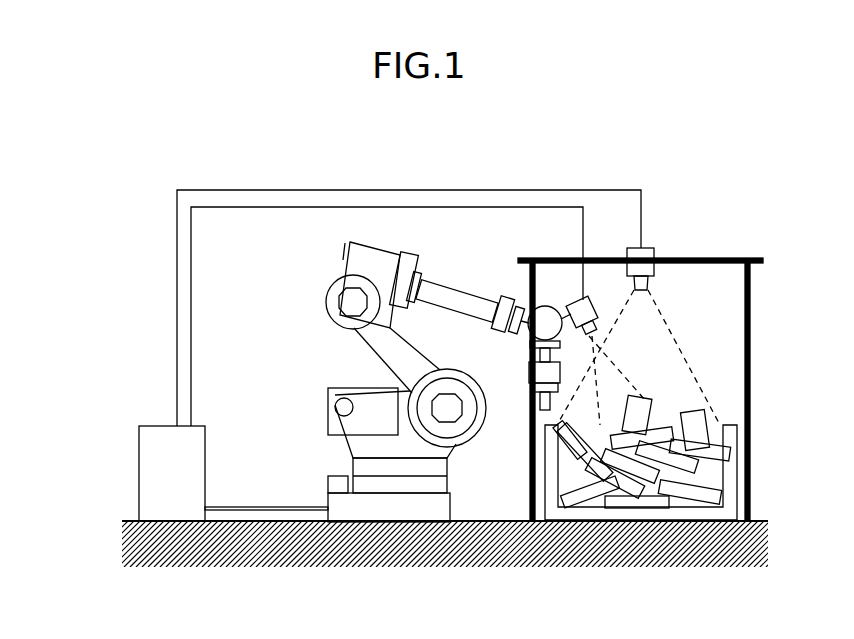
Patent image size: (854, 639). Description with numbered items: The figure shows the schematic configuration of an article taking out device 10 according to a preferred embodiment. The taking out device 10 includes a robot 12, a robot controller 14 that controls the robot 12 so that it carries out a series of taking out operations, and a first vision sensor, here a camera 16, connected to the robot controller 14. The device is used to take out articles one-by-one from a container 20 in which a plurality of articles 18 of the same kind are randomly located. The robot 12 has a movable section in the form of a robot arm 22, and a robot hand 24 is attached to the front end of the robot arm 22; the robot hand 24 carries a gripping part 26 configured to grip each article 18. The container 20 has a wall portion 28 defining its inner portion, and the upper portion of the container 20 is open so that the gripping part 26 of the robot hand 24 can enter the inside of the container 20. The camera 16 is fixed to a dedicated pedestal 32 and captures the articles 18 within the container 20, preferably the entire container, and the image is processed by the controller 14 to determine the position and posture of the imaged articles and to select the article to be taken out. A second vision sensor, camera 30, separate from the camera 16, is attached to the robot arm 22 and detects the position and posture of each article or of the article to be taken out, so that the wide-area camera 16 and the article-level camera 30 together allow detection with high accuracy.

The article taking out device 10 is at (136, 201).
The robot 12 is at (333, 369).
The robot controller 14 is at (158, 425).
The first vision sensor (camera) 16 is at (656, 256).
The articles 18 is at (647, 413).
The container 20 is at (740, 500).
The robot arm 22 is at (445, 295).
The robot hand 24 is at (518, 372).
The gripping part 26 is at (543, 397).
The wall portion 28 is at (728, 426).
The second vision sensor (camera) 30 is at (596, 300).
The pedestal 32 is at (762, 258).